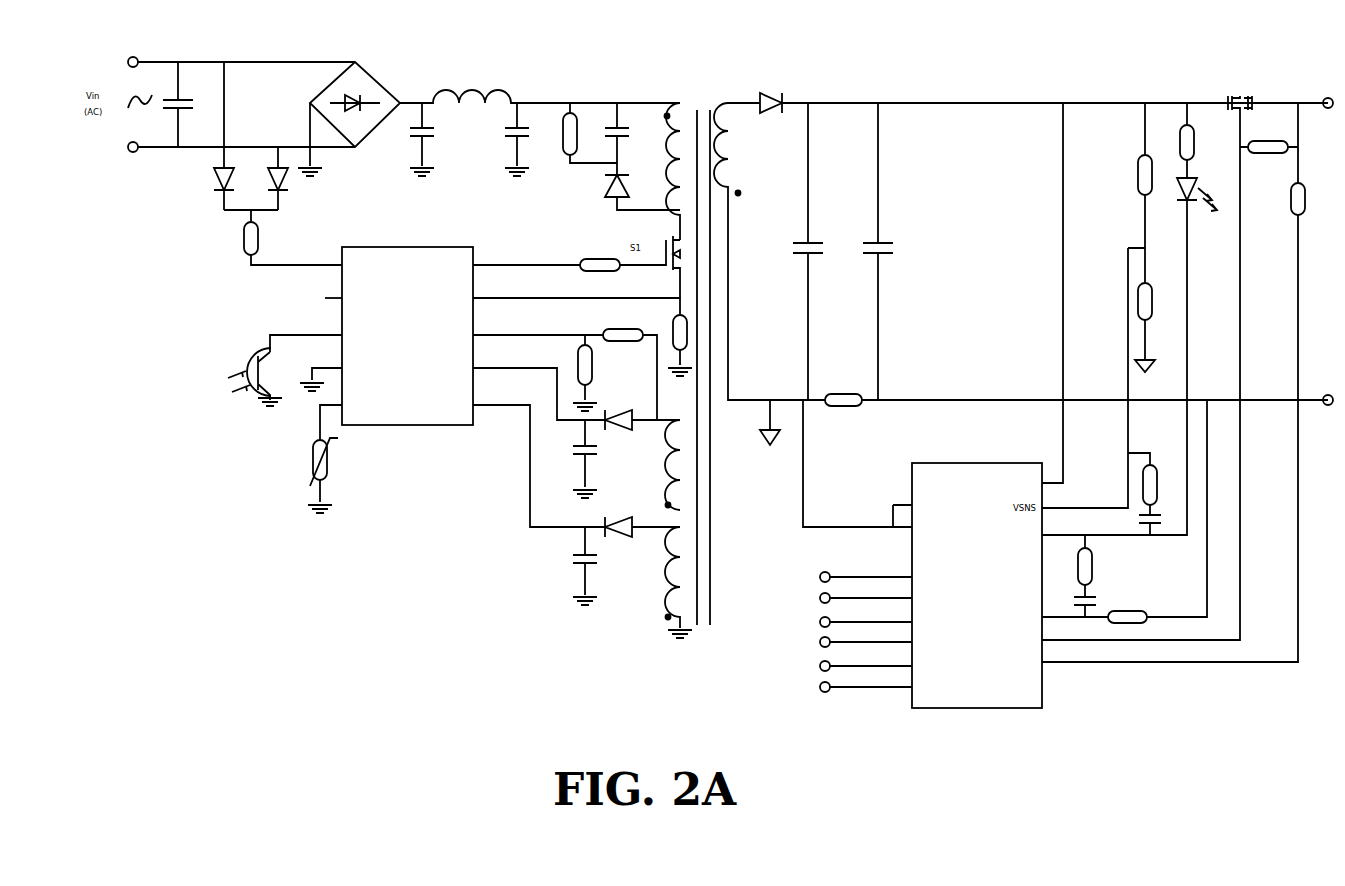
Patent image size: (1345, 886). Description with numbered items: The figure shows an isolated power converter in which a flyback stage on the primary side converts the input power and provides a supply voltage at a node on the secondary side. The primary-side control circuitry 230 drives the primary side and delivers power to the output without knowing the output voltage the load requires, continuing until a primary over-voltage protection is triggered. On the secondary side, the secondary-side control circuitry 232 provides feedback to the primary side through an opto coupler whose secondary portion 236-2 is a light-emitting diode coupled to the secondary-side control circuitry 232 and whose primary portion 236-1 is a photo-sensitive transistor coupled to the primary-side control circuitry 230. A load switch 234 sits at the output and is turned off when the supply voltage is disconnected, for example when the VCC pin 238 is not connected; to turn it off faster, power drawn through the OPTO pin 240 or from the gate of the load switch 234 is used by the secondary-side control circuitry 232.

The primary-side control circuitry 230 is at (476, 265).
The secondary-side control circuitry 232 is at (910, 697).
The load switch 234 is at (1245, 96).
The portion of opto coupler 236-1 is at (244, 378).
The portion of opto coupler 236-2 is at (1192, 197).
The VCC pin 238 is at (1017, 480).
The OPTO pin 240 is at (1020, 540).